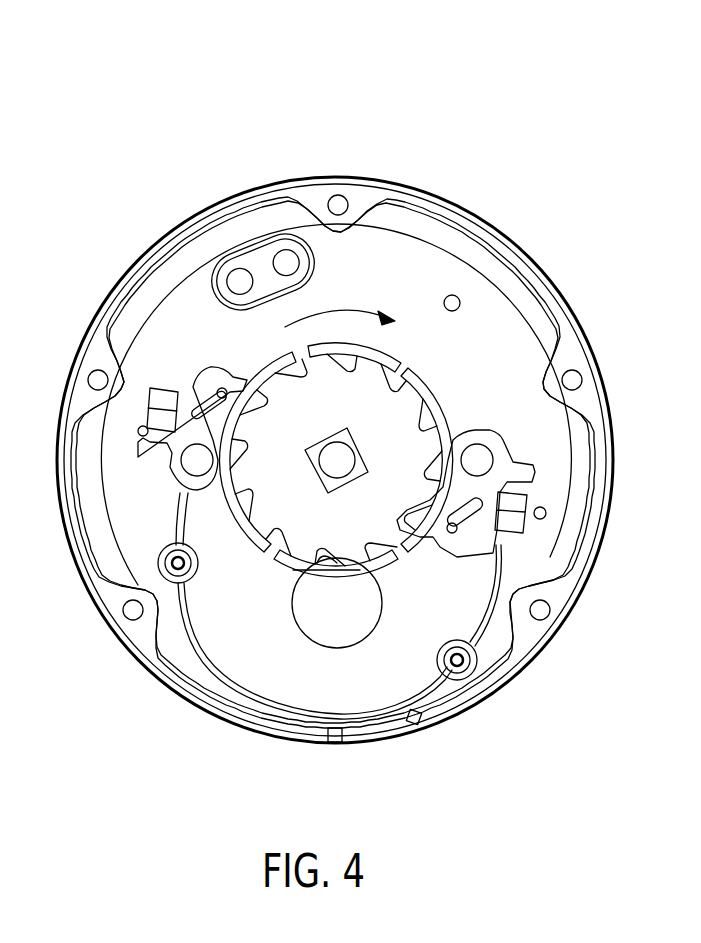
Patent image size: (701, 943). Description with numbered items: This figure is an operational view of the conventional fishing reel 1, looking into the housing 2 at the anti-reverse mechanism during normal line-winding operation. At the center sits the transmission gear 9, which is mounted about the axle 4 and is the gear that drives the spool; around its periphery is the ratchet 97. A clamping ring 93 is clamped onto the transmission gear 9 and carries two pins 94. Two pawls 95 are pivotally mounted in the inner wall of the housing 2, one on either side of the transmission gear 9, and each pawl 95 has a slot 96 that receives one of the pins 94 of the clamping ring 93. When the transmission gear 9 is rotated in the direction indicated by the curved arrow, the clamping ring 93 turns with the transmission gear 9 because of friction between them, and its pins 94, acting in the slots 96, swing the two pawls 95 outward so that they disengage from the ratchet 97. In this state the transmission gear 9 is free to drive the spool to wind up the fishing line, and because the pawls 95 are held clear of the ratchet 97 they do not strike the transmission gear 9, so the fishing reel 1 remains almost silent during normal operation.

The fishing reel 1 is at (490, 164).
The housing 2 is at (490, 265).
The axle 4 is at (360, 632).
The transmission gear 9 is at (403, 412).
The clamping ring 93 is at (302, 556).
The pin 94 is at (454, 533).
The pawl 95 is at (473, 535).
The slot 96 is at (480, 522).
The ratchet 97 is at (258, 548).